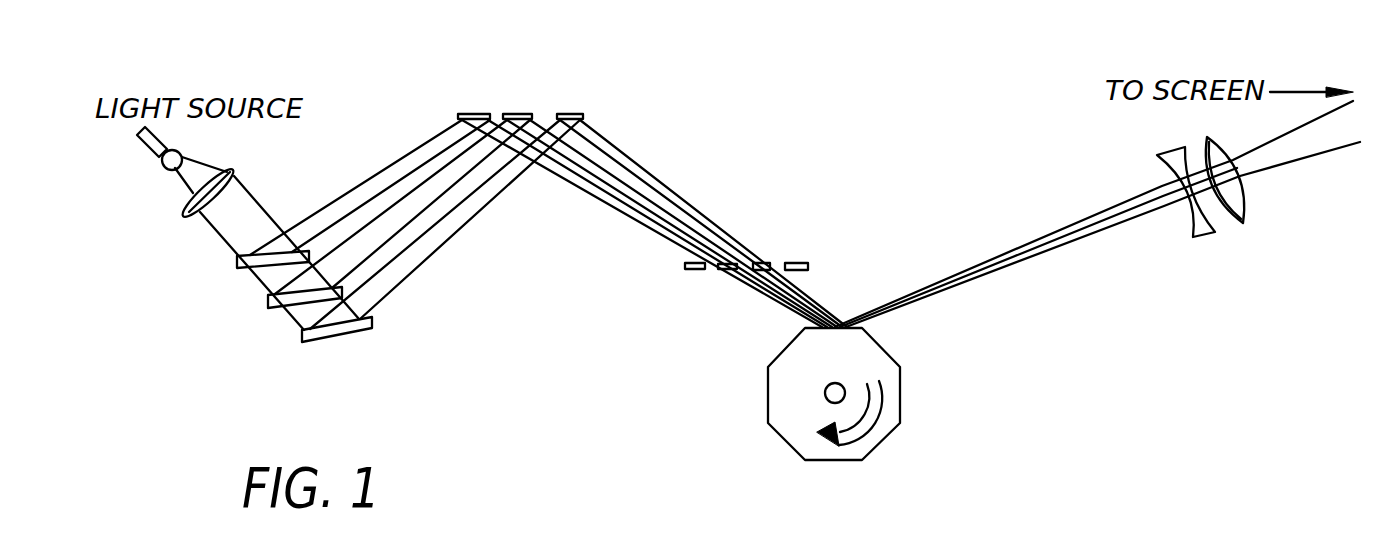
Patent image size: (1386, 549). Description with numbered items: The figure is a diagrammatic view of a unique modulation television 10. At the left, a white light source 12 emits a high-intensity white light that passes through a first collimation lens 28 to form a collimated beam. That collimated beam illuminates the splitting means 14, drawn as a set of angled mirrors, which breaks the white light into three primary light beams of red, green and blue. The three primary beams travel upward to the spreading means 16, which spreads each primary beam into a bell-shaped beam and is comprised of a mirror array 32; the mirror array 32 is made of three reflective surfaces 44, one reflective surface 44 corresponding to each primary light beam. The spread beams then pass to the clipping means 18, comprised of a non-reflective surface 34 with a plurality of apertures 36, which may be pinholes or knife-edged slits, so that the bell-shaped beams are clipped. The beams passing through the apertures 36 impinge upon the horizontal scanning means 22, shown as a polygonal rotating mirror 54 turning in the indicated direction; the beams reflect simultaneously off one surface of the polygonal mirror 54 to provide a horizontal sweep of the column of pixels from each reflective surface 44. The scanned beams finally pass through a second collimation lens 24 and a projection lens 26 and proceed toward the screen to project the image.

The modulation television 10 is at (381, 106).
The white light source 12 is at (161, 155).
The means for splitting white light into three primary beams 14 is at (244, 318).
The means for spreading primary beams into bell-shaped beams 16 is at (447, 111).
The means for clipping bell-shaped beams 18 is at (794, 226).
The horizontal scanning means 22 is at (799, 394).
The second collimation lens 24 is at (1190, 222).
The projection lens 26 is at (1243, 226).
The first collimation lens 28 is at (233, 175).
The mirror array 32 is at (583, 116).
The non-reflective surface 34 is at (685, 267).
The apertures 36 is at (762, 271).
The reflective surfaces 44 is at (546, 92).
The polygonal rotating mirror 54 is at (892, 402).